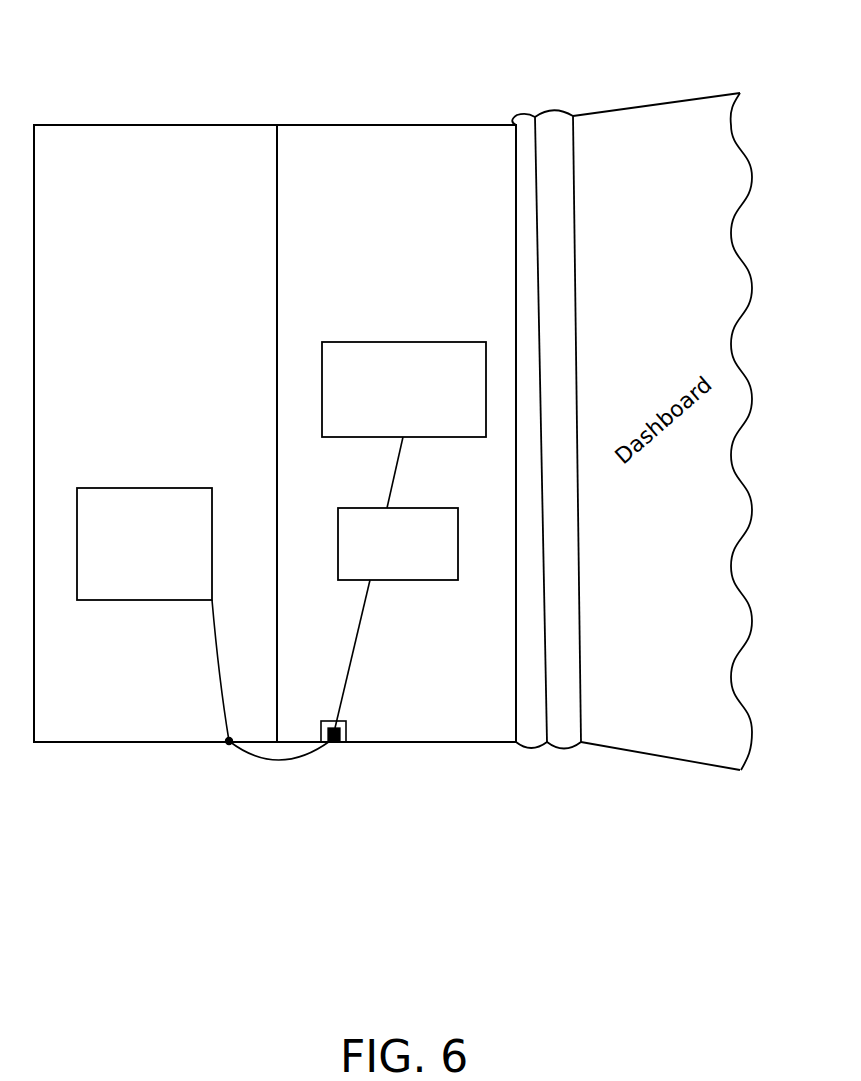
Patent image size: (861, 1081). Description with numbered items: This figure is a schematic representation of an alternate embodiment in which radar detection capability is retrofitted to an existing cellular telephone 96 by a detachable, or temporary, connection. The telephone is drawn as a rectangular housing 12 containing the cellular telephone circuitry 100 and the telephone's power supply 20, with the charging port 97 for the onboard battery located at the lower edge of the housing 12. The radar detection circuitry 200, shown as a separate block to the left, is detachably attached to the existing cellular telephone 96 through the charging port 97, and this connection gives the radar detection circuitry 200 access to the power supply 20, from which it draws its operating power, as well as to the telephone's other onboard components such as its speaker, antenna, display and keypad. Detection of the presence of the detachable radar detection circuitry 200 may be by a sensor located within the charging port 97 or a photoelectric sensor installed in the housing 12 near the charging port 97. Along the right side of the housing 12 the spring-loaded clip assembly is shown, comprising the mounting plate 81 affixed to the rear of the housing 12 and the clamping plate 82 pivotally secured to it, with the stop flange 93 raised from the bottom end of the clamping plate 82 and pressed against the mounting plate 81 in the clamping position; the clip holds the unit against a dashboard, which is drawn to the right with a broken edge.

The housing 12 is at (317, 124).
The existing cellular telephone 96 is at (414, 114).
The mounting plate 81 is at (530, 205).
The clamping plate 82 is at (565, 89).
The cellular telephone circuitry 100 is at (458, 342).
The power supply 20 is at (459, 532).
The radar detection circuitry 200 is at (212, 488).
The charging port 97 is at (345, 722).
The stop flange 93 is at (553, 743).